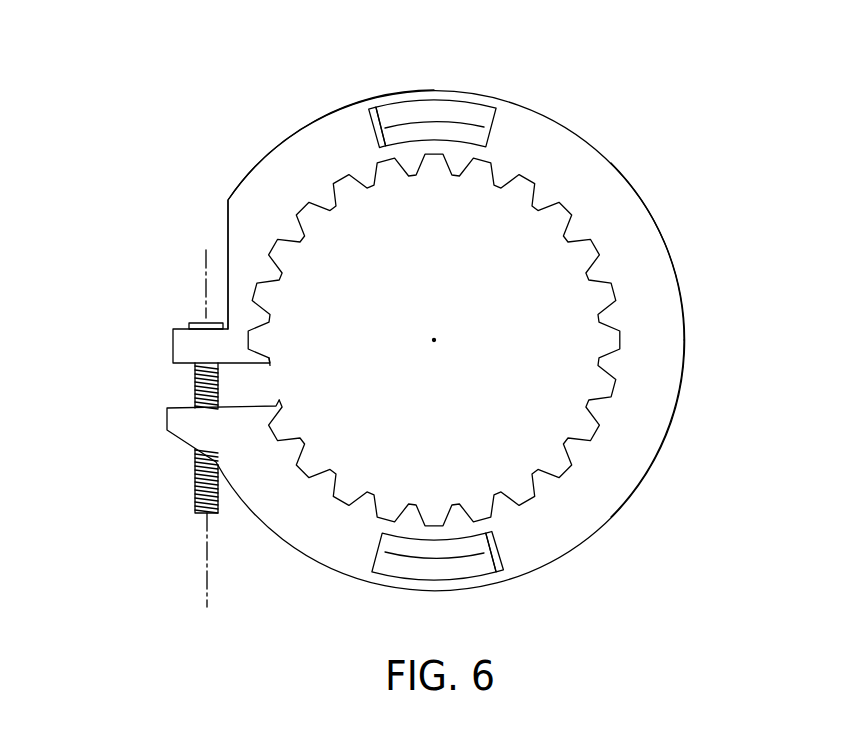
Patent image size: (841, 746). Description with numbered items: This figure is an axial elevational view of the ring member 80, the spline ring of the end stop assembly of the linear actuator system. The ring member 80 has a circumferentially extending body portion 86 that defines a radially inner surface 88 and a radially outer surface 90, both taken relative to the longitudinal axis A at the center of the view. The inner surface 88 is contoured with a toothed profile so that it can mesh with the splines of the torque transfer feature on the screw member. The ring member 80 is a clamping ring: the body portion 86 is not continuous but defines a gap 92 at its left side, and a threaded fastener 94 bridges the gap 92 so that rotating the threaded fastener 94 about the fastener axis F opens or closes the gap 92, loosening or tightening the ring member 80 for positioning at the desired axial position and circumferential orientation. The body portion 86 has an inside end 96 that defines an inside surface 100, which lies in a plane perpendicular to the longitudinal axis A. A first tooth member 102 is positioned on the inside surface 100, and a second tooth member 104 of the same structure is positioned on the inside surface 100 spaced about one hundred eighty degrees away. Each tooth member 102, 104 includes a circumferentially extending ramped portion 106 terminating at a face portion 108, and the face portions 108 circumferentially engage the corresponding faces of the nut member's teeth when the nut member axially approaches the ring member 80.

The ring member 80 is at (608, 70).
The circumferentially extending body portion 86 is at (620, 198).
The inner surface 88 is at (357, 180).
The outer surface 90 is at (293, 132).
The gap 92 is at (160, 378).
The threaded fastener 94 is at (195, 492).
The inside end 96 is at (658, 247).
The inside surface 100 is at (677, 341).
The first tooth member 102 is at (495, 103).
The second tooth member 104 is at (375, 578).
The ramped portion 106 is at (432, 117).
The face portion 108 is at (375, 130).
The longitudinal axis A is at (434, 340).
The fastener axis F is at (207, 580).